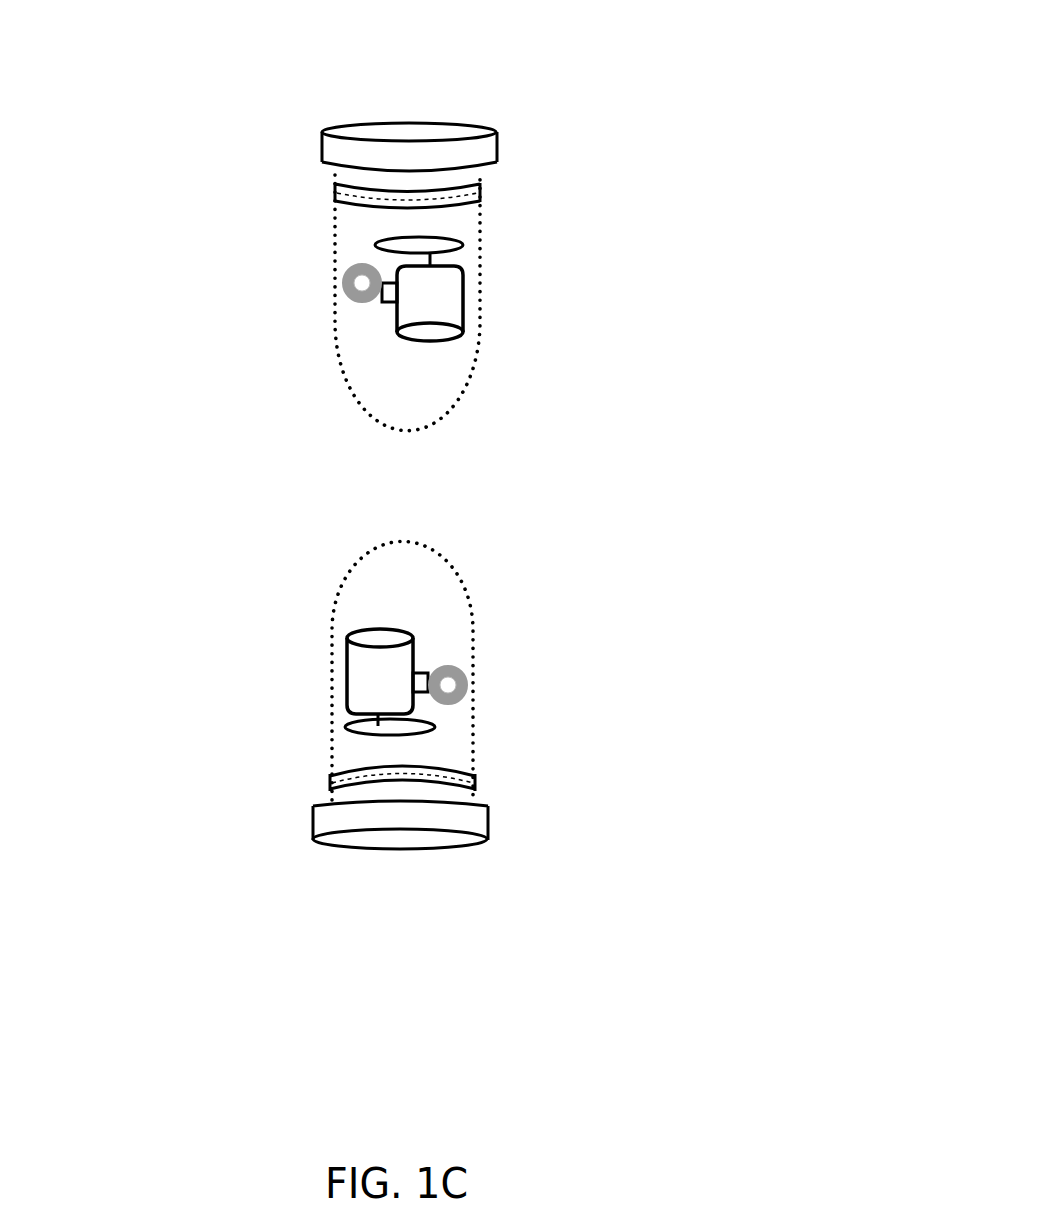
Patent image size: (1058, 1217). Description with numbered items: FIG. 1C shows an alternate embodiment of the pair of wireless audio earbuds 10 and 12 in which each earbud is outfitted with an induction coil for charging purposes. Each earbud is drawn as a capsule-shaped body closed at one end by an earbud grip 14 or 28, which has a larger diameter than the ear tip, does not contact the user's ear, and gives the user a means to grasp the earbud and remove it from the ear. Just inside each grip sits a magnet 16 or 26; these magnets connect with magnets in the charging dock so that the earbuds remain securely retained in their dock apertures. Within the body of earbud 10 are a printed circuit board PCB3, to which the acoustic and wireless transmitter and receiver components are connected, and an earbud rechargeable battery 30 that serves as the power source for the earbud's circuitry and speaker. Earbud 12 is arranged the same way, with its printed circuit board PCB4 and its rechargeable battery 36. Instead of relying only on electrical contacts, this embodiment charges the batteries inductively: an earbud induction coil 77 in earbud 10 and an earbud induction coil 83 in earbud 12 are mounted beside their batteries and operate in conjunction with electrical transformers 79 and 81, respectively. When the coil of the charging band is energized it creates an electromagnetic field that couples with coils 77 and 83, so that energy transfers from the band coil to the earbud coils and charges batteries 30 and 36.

The earbud 10 is at (277, 292).
The earbud 12 is at (223, 748).
The earbud grip 14 is at (412, 128).
The magnet 16 is at (425, 192).
The magnet 26 is at (328, 787).
The earbud grip 28 is at (470, 840).
The earbud rechargeable battery 30 is at (428, 308).
The earbud rechargeable battery 36 is at (372, 662).
The earbud induction coil 77 is at (340, 296).
The electrical transformer 79 is at (378, 298).
The electrical transformer 81 is at (423, 668).
The earbud induction coil 83 is at (473, 667).
The printed circuit board PCB3 is at (467, 243).
The printed circuit board PCB4 is at (432, 713).